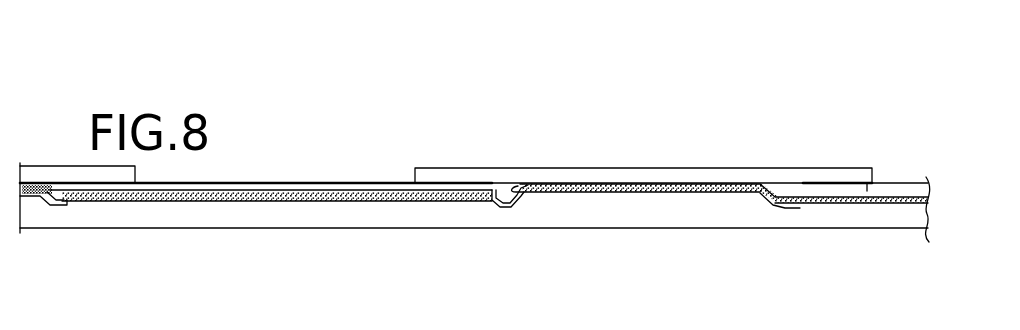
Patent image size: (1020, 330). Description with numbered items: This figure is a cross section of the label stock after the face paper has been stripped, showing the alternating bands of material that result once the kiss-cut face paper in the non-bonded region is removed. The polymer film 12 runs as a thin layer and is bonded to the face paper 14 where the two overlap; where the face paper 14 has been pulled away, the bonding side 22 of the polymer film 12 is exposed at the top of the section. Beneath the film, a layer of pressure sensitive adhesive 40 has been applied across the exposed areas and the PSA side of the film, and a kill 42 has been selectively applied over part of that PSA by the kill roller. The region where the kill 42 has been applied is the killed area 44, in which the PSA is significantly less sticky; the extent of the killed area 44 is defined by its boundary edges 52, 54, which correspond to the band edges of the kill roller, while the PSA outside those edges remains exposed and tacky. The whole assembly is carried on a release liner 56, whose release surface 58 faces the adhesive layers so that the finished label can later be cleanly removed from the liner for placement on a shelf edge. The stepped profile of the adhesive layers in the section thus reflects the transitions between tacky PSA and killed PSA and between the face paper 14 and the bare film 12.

The polymer film 12 is at (245, 186).
The face paper 14 is at (610, 178).
The bonding side 22 is at (915, 180).
The pressure sensitive adhesive 40 is at (288, 200).
The kill 42 is at (508, 205).
The killed area 44 is at (672, 202).
The boundary edge 52 is at (497, 203).
The boundary edge 54 is at (800, 207).
The release liner 56 is at (110, 218).
The release surface 58 is at (153, 203).